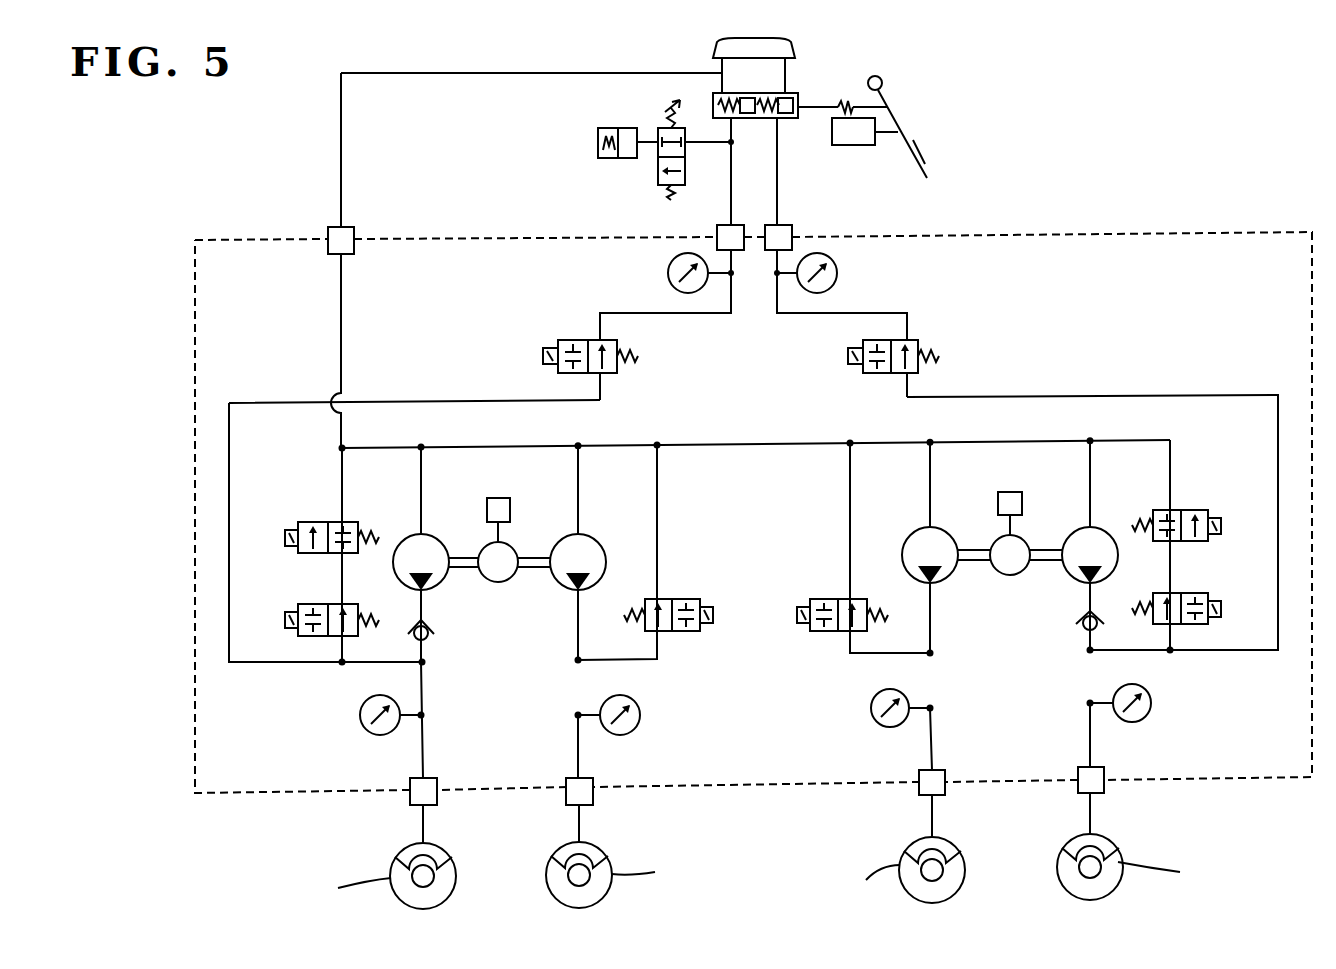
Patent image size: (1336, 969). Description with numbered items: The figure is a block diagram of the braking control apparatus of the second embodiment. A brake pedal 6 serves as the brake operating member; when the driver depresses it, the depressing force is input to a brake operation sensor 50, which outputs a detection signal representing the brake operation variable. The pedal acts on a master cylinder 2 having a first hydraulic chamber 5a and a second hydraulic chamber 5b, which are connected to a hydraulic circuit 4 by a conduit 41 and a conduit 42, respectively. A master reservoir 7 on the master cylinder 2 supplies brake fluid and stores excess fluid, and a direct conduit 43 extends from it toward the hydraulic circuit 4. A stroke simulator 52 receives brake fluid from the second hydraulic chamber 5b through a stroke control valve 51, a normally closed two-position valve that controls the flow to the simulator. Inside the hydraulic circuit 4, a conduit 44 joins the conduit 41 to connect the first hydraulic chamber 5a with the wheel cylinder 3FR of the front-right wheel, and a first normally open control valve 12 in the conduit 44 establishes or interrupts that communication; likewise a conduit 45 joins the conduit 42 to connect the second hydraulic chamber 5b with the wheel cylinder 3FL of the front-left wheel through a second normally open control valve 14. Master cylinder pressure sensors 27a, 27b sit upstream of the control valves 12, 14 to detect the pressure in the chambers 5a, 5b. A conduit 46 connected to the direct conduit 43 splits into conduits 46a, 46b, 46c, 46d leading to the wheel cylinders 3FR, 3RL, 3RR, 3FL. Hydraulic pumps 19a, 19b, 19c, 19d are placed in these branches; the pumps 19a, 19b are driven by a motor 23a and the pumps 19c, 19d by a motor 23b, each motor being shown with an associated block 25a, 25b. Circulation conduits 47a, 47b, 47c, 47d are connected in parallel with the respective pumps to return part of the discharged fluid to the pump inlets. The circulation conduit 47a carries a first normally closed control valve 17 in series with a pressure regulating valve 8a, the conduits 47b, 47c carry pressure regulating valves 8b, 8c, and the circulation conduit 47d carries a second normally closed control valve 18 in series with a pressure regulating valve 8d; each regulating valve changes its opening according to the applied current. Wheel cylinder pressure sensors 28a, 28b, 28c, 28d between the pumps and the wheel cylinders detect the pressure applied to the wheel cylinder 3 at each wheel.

The master cylinder 2 is at (790, 93).
The wheel cylinder 3 is at (748, 785).
The wheel cylinder 3FL is at (407, 850).
The wheel cylinder 3RR is at (597, 846).
The wheel cylinder 3RL is at (920, 840).
The wheel cylinder 3FR is at (1102, 840).
The hydraulic circuit 4 is at (1197, 228).
The first hydraulic chamber 5a is at (772, 120).
The second hydraulic chamber 5b is at (733, 120).
The brake pedal 6 is at (919, 146).
The master reservoir 7 is at (715, 50).
The pressure regulating valve 8a is at (1198, 592).
The pressure regulating valve 8b is at (828, 598).
The pressure regulating valve 8c is at (683, 598).
The pressure regulating valve 8d is at (322, 603).
The first normally open control valve 12 is at (920, 340).
The second normally open control valve 14 is at (556, 340).
The first normally closed control valve 17 is at (1202, 510).
The second normally closed control valve 18 is at (308, 521).
The hydraulic pump 19a is at (1109, 533).
The hydraulic pump 19b is at (903, 552).
The hydraulic pump 19c is at (592, 538).
The hydraulic pump 19d is at (441, 590).
The motor 23a is at (1010, 575).
The motor 23b is at (498, 582).
The motor controller 25a is at (998, 503).
The motor controller 25b is at (487, 511).
The master cylinder pressure sensor 27a is at (837, 273).
The master cylinder pressure sensor 27b is at (668, 273).
The wheel cylinder pressure sensor 28a is at (1144, 720).
The wheel cylinder pressure sensor 28b is at (872, 708).
The wheel cylinder pressure sensor 28c is at (640, 713).
The wheel cylinder pressure sensor 28d is at (360, 715).
The conduit 41 is at (778, 200).
The conduit 42 is at (731, 203).
The direct conduit 43 is at (448, 73).
The conduit 44 is at (1118, 395).
The conduit 45 is at (452, 400).
The conduit 46 is at (340, 330).
The conduit 46a is at (1088, 498).
The conduit 46b is at (928, 497).
The conduit 46c is at (578, 506).
The conduit 46d is at (418, 511).
The circulation conduit 47a is at (1171, 467).
The circulation conduit 47b is at (850, 508).
The circulation conduit 47c is at (659, 528).
The circulation conduit 47d is at (340, 482).
The brake operation sensor 50 is at (855, 146).
The stroke control valve 51 is at (658, 172).
The stroke simulator 52 is at (598, 142).